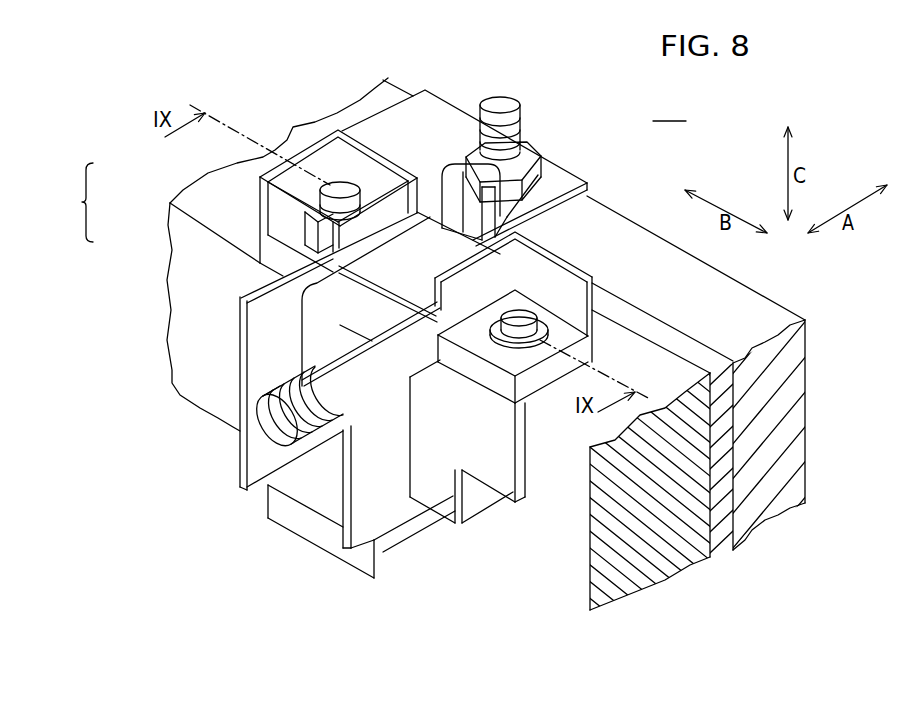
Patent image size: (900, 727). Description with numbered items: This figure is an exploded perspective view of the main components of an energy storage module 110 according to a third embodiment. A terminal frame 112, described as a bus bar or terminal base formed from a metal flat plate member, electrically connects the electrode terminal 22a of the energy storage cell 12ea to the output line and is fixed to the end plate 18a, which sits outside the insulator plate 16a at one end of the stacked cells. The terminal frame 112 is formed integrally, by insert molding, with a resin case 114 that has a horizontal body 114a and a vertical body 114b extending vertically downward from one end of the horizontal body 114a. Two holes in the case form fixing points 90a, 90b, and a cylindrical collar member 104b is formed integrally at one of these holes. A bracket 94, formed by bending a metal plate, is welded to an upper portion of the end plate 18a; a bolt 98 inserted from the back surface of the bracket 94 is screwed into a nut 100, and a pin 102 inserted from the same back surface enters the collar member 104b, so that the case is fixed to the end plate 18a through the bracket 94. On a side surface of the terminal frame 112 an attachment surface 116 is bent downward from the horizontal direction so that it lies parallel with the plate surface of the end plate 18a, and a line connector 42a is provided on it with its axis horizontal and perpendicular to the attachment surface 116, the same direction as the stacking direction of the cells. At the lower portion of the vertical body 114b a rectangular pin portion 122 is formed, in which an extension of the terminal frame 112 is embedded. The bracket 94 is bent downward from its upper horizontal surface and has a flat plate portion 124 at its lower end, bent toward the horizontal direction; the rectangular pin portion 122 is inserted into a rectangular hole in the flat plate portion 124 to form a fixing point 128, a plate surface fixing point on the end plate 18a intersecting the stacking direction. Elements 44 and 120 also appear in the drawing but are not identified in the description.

The energy storage module 110 is at (517, 233).
The fixing point 90a is at (330, 167).
The fixing point 90b is at (573, 308).
The bolt 98 is at (350, 185).
The nut 100 is at (258, 178).
The electrode terminal 22a is at (507, 103).
The pin 102 is at (524, 324).
The collar member 104b is at (507, 340).
The resin case 114 is at (219, 254).
The horizontal body 114a is at (250, 203).
The vertical body 114b is at (235, 286).
The terminal frame 112 is at (297, 338).
The attachment surface 116 is at (317, 362).
The line connector 42a is at (268, 387).
The fastening bolt 44 is at (277, 427).
The lower block 120 is at (250, 531).
The rectangular pin portion 122 is at (266, 525).
The fixing point 128 is at (327, 525).
The flat plate portion 124 is at (413, 533).
The bracket 94 is at (490, 494).
The energy storage cell 12ea is at (775, 325).
The insulator plate 16a is at (723, 545).
The end plate 18a is at (573, 602).